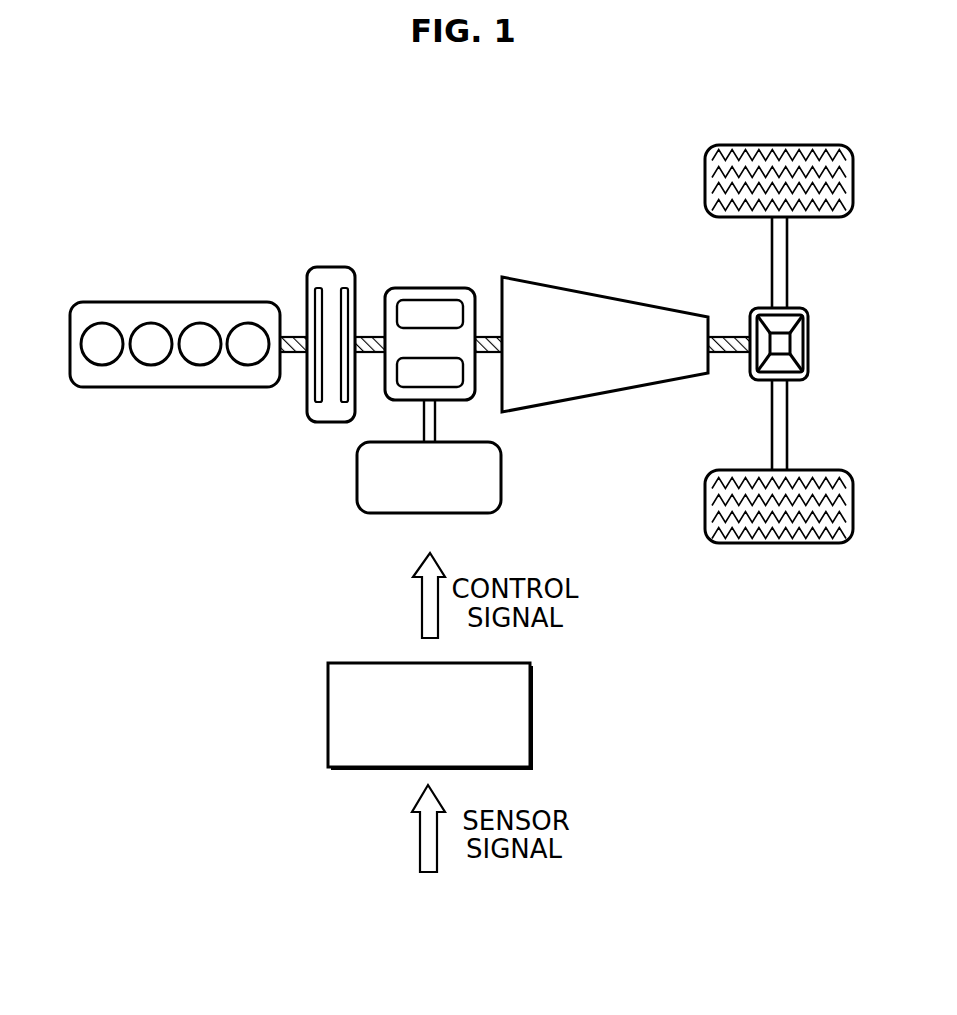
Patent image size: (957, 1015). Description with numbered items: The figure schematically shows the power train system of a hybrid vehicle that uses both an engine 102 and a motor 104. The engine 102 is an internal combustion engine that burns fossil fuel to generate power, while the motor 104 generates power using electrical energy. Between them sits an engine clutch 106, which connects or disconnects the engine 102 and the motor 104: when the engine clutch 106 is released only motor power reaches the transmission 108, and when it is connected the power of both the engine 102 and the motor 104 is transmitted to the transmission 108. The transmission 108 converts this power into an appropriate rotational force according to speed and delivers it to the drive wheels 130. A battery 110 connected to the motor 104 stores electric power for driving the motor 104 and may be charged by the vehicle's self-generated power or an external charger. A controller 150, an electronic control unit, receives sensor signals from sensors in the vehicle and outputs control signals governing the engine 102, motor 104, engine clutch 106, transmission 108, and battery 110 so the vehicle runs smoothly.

The engine 102 is at (175, 302).
The motor 104 is at (429, 288).
The engine clutch 106 is at (331, 267).
The transmission 108 is at (592, 295).
The battery 110 is at (357, 478).
The drive wheels 130 is at (823, 470).
The controller 150 is at (369, 663).